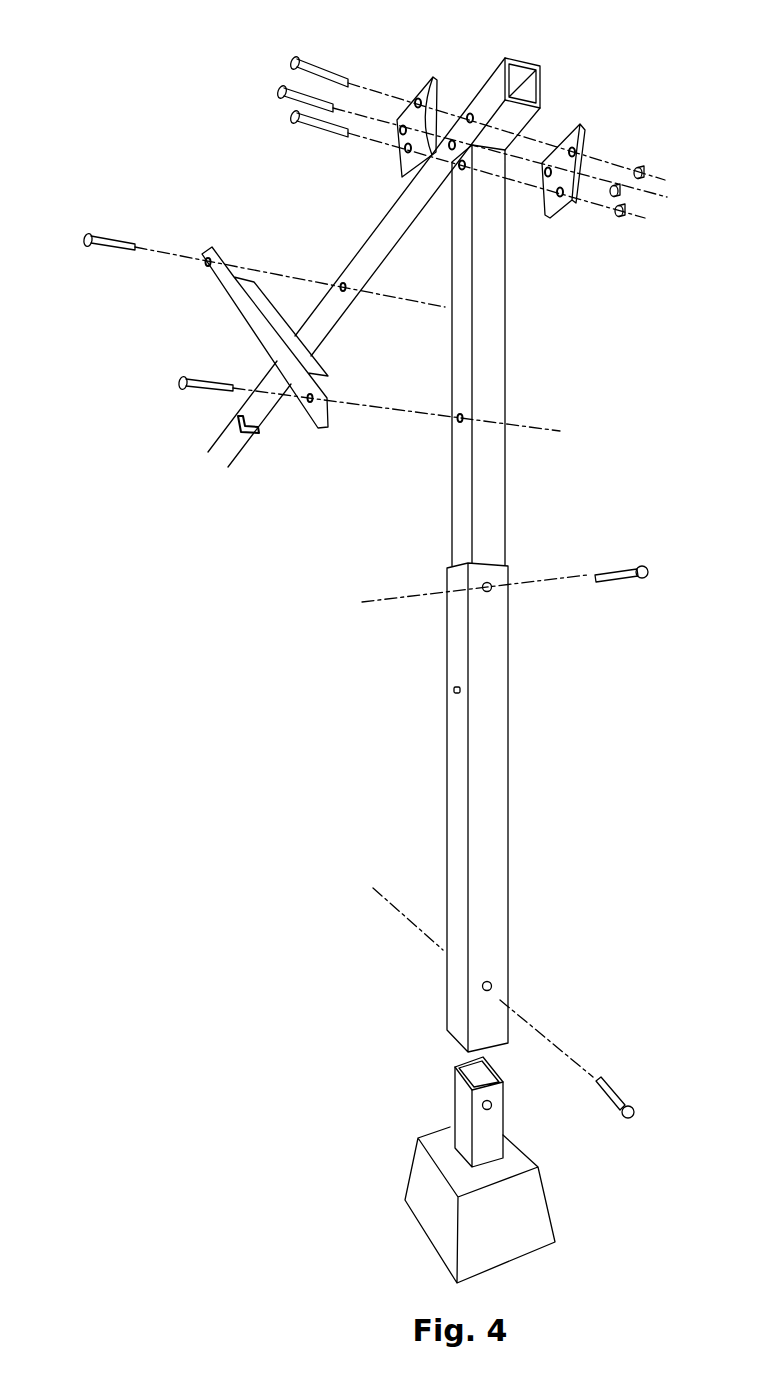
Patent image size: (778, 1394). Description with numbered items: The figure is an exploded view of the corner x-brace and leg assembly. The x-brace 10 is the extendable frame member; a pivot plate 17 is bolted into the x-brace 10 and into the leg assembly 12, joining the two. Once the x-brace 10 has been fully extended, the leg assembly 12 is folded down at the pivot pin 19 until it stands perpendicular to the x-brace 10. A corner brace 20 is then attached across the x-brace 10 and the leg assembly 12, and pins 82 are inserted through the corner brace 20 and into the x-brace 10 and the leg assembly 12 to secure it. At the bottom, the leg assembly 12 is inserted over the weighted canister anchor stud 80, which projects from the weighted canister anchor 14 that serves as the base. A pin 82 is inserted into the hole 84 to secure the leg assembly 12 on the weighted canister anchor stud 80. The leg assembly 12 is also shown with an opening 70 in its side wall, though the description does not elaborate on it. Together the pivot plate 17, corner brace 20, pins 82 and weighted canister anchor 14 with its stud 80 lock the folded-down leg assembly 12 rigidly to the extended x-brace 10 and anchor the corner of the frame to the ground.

The x-brace 10 is at (240, 467).
The leg assembly 12 is at (508, 768).
The weighted canister anchor 14 is at (422, 1185).
The pivot plate 17 is at (583, 122).
The pivot pin 19 is at (317, 130).
The corner brace 20 is at (240, 326).
The hole 70 is at (450, 691).
The weighted canister anchor stud 80 is at (453, 1090).
The pins 82 is at (180, 376).
The hole 84 is at (491, 584).